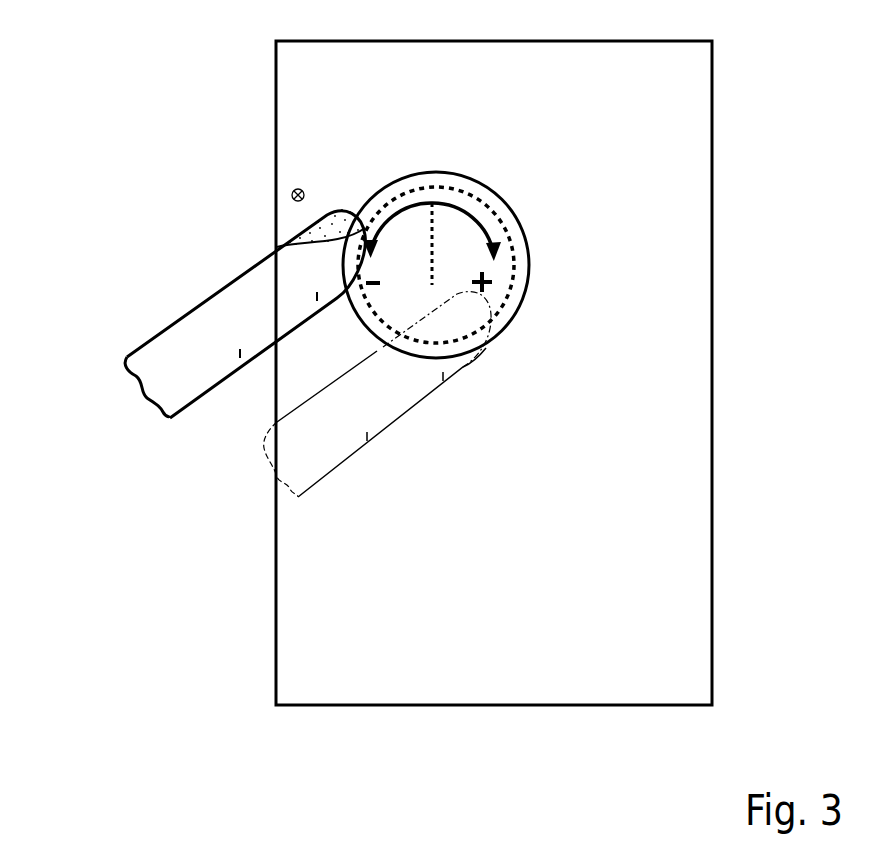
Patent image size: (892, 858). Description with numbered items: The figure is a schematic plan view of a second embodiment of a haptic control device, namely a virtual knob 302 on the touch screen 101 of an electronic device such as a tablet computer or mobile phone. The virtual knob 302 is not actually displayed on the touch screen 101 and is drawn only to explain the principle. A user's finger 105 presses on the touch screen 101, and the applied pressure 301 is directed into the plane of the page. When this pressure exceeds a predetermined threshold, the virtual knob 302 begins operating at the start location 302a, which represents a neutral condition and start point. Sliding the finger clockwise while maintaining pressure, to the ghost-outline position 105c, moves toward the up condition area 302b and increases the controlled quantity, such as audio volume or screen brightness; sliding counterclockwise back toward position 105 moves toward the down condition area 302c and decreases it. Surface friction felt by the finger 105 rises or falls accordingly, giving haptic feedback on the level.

The touch screen 101 is at (698, 83).
The user's finger 105 is at (148, 350).
The finger position after clockwise slide 105c is at (305, 454).
The applied pressure 301 is at (292, 188).
The virtual knob 302 is at (430, 176).
The start location 302a is at (432, 212).
The up condition area 302b is at (496, 229).
The down condition area 302c is at (410, 207).